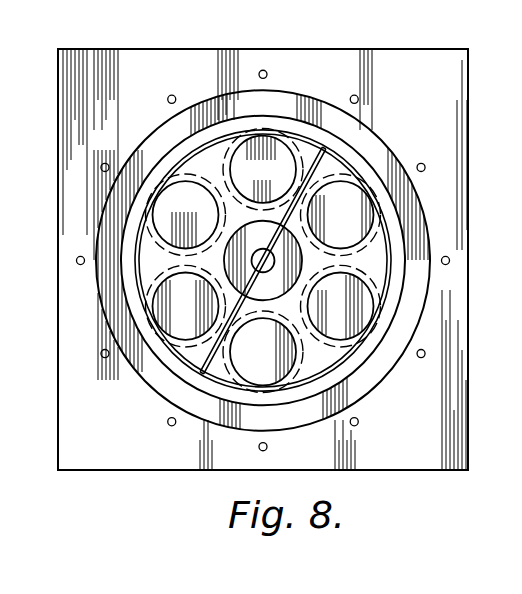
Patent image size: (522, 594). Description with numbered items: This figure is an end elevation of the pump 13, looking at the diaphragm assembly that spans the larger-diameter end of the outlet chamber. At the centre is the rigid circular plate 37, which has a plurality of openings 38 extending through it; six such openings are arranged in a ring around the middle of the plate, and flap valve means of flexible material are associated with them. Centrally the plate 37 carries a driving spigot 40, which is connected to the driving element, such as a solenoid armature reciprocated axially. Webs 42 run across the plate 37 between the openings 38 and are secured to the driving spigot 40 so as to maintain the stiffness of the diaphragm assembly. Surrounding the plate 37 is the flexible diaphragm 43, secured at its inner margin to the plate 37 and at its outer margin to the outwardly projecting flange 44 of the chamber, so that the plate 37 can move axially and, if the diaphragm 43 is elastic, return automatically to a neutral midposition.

The pump 13 is at (112, 492).
The rigid circular plate 37 is at (190, 357).
The openings 38 is at (276, 174).
The driving spigot 40 is at (290, 264).
The webs 42 is at (300, 197).
The flexible diaphragm 43 is at (135, 355).
The outwardly projecting flange 44 is at (68, 428).